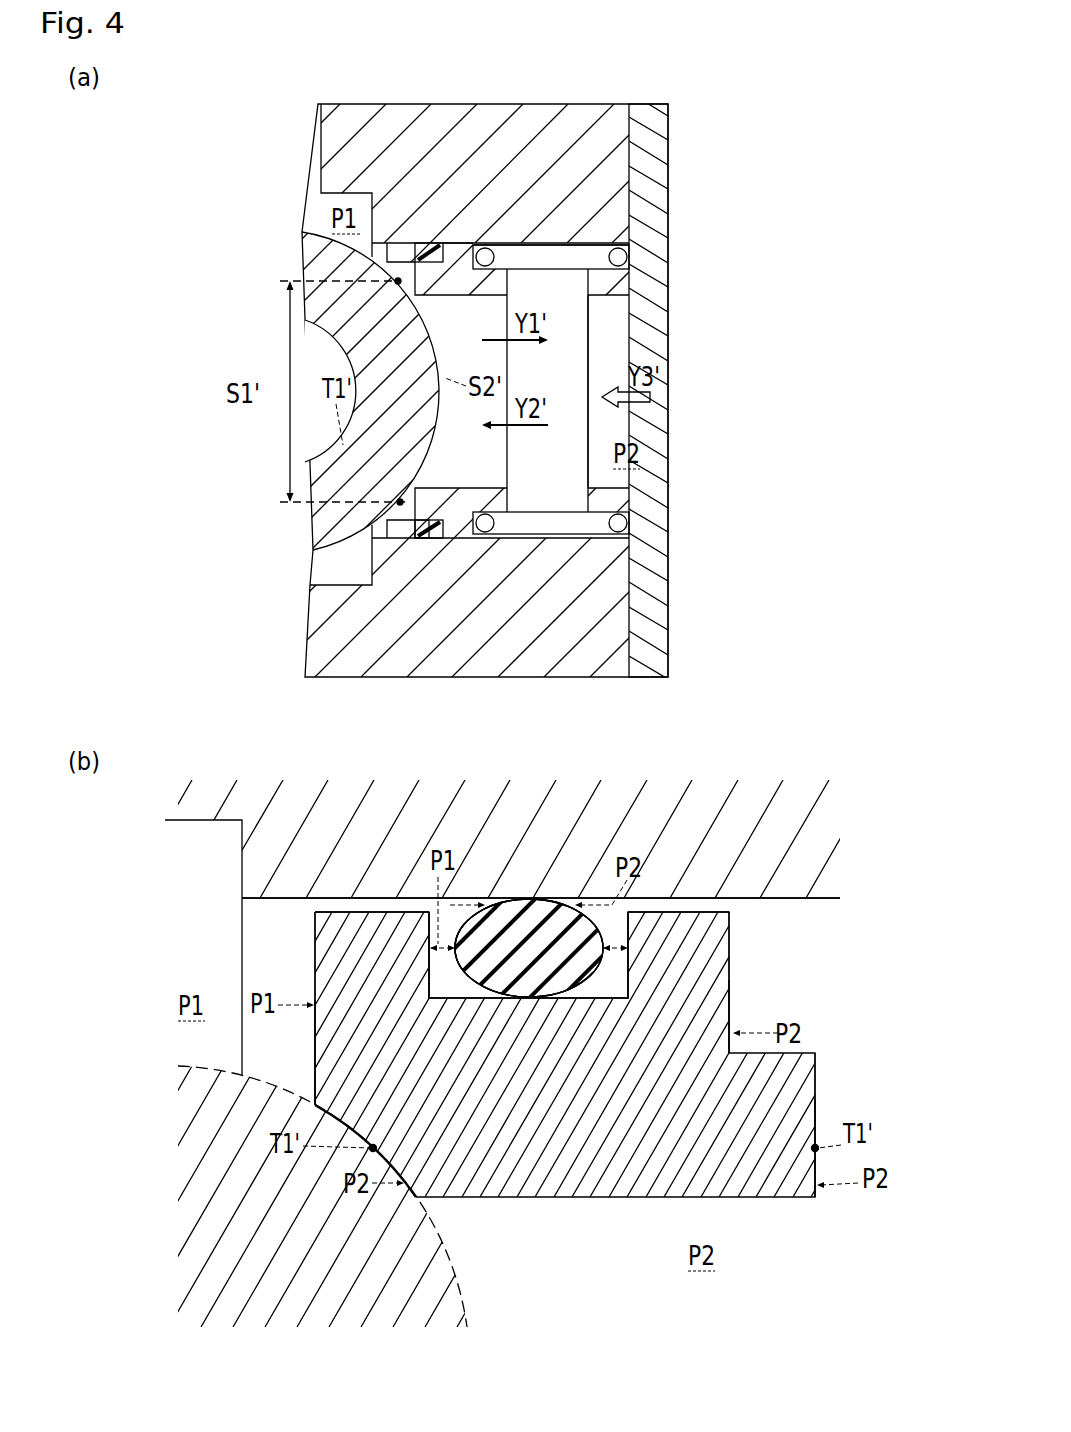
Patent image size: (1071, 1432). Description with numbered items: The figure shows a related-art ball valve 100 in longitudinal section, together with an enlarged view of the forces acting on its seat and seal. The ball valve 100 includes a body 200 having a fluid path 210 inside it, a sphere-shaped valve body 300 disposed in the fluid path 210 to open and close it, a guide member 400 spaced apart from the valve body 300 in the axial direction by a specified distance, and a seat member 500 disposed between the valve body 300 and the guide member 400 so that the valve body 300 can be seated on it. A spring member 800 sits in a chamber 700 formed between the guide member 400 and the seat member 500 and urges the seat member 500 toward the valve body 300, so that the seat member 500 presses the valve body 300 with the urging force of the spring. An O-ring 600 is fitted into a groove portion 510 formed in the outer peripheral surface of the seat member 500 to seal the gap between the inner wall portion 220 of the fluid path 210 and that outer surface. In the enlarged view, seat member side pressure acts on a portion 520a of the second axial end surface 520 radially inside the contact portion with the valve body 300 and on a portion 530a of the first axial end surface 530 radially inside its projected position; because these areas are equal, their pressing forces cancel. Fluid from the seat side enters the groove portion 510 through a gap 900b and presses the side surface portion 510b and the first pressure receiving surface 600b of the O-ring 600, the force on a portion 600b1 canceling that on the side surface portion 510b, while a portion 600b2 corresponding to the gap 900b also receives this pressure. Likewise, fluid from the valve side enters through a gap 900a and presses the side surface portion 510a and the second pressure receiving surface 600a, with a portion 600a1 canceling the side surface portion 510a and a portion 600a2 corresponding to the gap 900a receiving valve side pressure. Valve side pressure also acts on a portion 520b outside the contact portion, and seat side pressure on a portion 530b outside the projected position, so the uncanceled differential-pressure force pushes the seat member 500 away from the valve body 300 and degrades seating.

In FIG. 4A, the ball valve 100 is at (601, 92).
In FIG. 4A, the body 200 is at (600, 148).
In FIG. 4B, the body 200 is at (250, 857).
In FIG. 4A, the fluid path 210 is at (648, 337).
In FIG. 4B, the fluid path 210 is at (833, 1271).
In FIG. 4A, the inner wall portion 220 is at (629, 258).
In FIG. 4B, the inner wall portion 220 is at (798, 898).
In FIG. 4A, the valve body 300 is at (305, 262).
In FIG. 4B, the valve body 300 is at (195, 1128).
In FIG. 4A, the guide member 400 is at (660, 205).
In FIG. 4A, the seat member 500 is at (458, 507).
In FIG. 4B, the seat member 500 is at (667, 935).
In FIG. 4A, the groove portion 510 is at (432, 250).
In FIG. 4B, the groove portion 510 is at (575, 998).
In FIG. 4B, the side surface portion 510a is at (431, 1000).
In FIG. 4B, the side surface portion 510b is at (630, 970).
In FIG. 4B, the second axial end surface 520 is at (310, 945).
In FIG. 4B, the portion 520a is at (405, 1205).
In FIG. 4B, the portion 520b is at (312, 1043).
In FIG. 4B, the first axial end surface 530 is at (737, 932).
In FIG. 4B, the portion 530a is at (818, 1200).
In FIG. 4B, the portion 530b is at (736, 975).
In FIG. 4A, the O-ring 600 is at (428, 246).
In FIG. 4B, the O-ring 600 is at (532, 899).
In FIG. 4A, the second pressure receiving surface 600a is at (428, 540).
In FIG. 4B, the second pressure receiving surface 600a is at (434, 904).
In FIG. 4B, the portion 600a1 is at (455, 950).
In FIG. 4B, the portion 600a2 is at (488, 900).
In FIG. 4A, the first pressure receiving surface 600b is at (410, 525).
In FIG. 4B, the first pressure receiving surface 600b is at (610, 940).
In FIG. 4B, the portion 600b1 is at (600, 985).
In FIG. 4B, the portion 600b2 is at (583, 900).
In FIG. 4A, the chamber 700 is at (470, 240).
In FIG. 4A, the spring member 800 is at (630, 525).
In FIG. 4B, the gap 900a is at (358, 905).
In FIG. 4B, the gap 900b is at (712, 898).